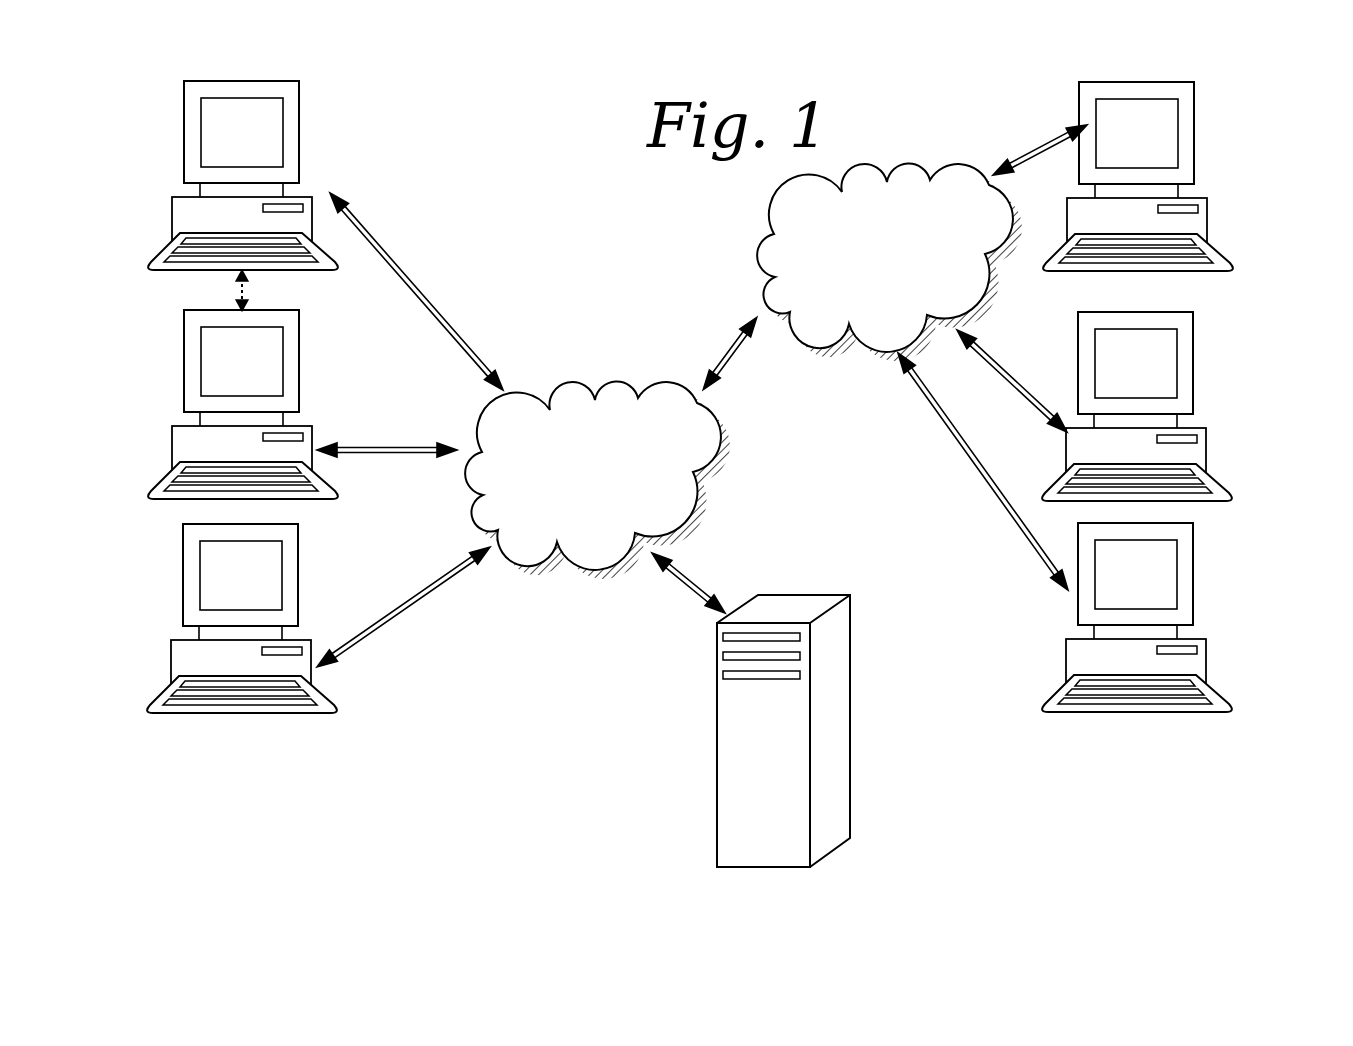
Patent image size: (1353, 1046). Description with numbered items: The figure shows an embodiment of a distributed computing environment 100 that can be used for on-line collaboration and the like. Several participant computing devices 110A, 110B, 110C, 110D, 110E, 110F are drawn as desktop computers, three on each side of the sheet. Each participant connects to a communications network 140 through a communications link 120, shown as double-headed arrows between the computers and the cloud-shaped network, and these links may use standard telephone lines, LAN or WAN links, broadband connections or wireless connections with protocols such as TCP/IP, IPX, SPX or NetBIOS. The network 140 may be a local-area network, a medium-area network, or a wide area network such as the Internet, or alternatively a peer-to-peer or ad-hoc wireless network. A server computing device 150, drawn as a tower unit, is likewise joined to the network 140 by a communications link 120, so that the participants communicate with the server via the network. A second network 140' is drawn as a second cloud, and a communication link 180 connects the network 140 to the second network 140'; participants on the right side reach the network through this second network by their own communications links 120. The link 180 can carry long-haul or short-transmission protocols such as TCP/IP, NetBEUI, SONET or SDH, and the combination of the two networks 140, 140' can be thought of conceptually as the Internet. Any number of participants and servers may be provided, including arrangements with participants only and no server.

The distributed computing environment 100 is at (608, 262).
The participant computing device 110A is at (256, 130).
The participant computing device 110B is at (269, 366).
The participant computing device 110C is at (262, 585).
The participant computing device 110D is at (1156, 120).
The participant computing device 110E is at (1147, 367).
The participant computing device 110F is at (1158, 586).
The communications link 120 is at (450, 292).
The communications network 140 is at (597, 480).
The second network 140' is at (889, 262).
The server computing device 150 is at (809, 606).
The communication link 180 is at (712, 337).